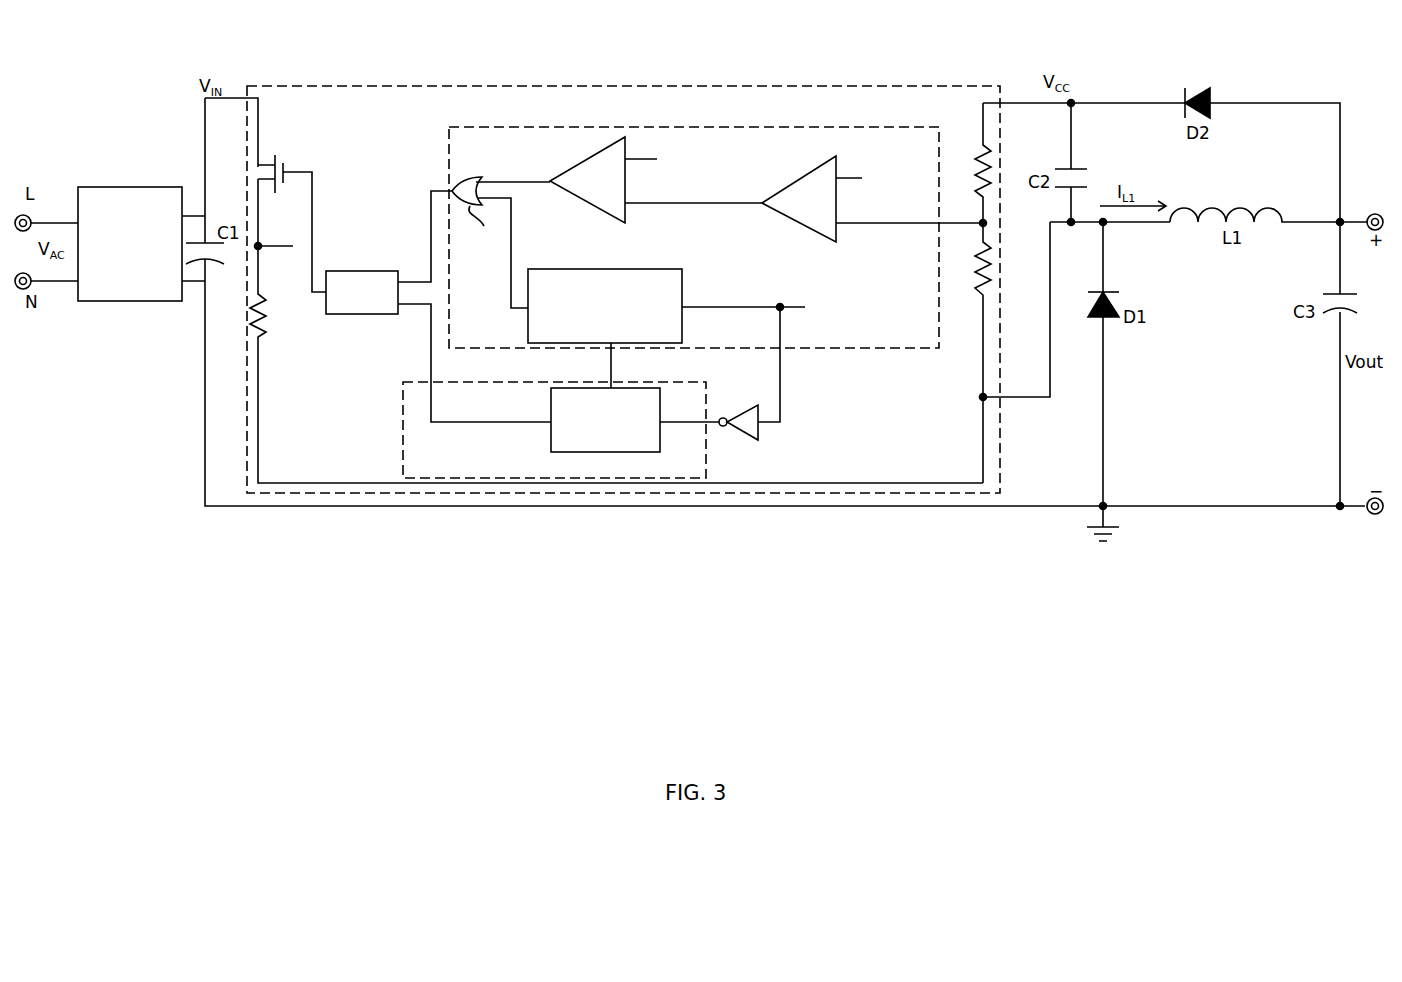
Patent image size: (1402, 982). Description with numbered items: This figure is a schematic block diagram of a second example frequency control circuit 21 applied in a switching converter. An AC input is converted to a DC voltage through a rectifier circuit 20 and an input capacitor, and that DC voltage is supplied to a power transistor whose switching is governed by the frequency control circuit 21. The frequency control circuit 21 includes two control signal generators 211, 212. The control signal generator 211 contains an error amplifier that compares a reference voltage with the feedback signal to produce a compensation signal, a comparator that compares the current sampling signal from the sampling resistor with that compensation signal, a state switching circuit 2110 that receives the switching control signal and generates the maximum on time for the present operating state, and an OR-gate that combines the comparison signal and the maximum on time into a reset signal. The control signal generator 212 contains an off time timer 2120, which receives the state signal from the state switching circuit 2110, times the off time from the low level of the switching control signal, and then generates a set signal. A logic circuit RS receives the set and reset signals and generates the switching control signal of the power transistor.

The rectifier circuit 20 is at (123, 301).
The frequency control circuit 21 is at (370, 493).
The control signal generator 211 is at (716, 274).
The control signal generator 212 is at (580, 430).
The state switching circuit 2110 is at (605, 306).
The off time timer 2120 is at (605, 420).